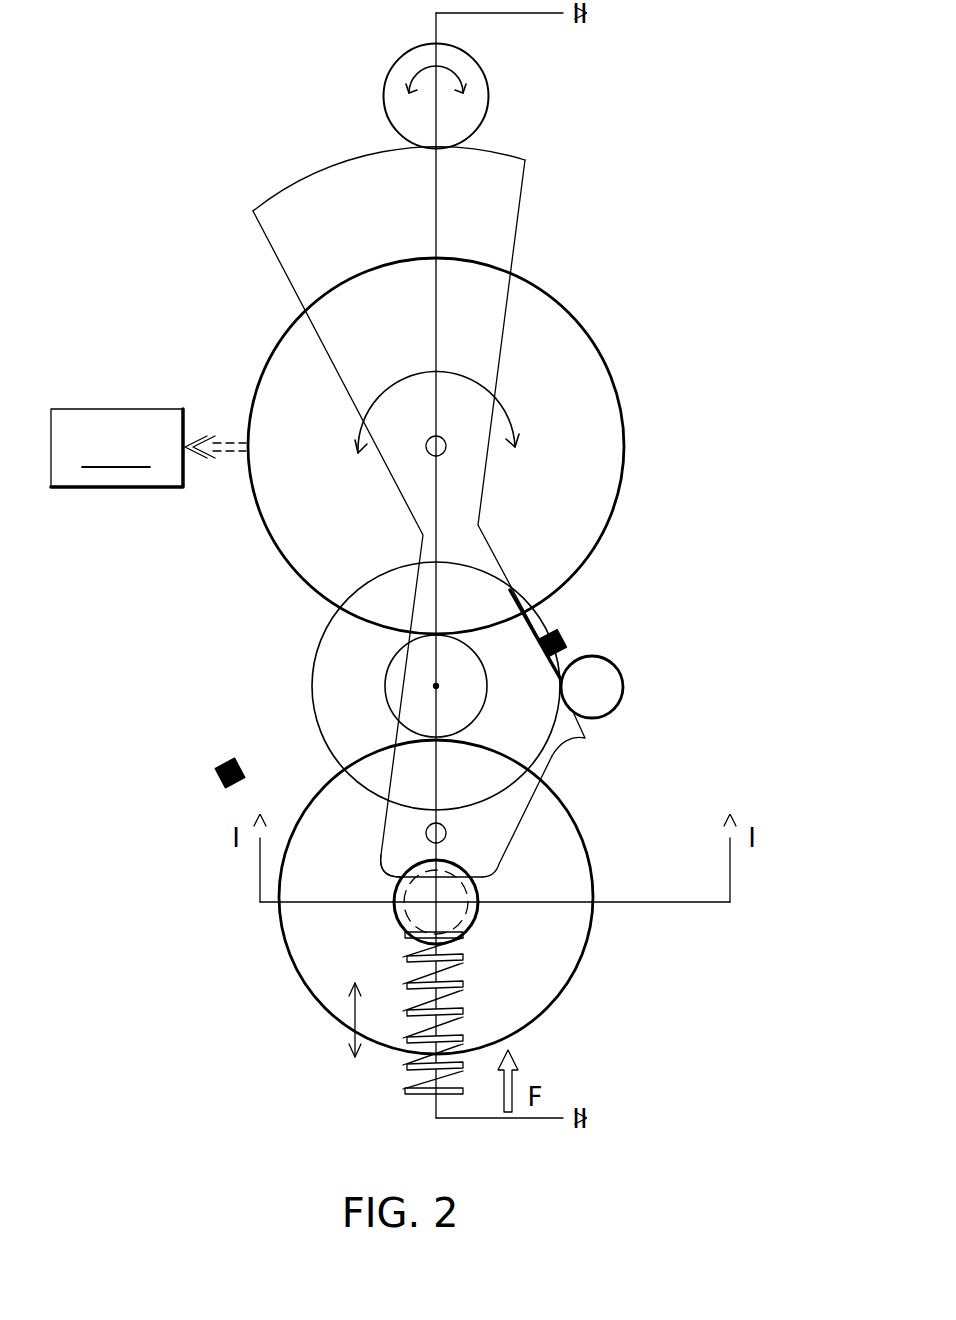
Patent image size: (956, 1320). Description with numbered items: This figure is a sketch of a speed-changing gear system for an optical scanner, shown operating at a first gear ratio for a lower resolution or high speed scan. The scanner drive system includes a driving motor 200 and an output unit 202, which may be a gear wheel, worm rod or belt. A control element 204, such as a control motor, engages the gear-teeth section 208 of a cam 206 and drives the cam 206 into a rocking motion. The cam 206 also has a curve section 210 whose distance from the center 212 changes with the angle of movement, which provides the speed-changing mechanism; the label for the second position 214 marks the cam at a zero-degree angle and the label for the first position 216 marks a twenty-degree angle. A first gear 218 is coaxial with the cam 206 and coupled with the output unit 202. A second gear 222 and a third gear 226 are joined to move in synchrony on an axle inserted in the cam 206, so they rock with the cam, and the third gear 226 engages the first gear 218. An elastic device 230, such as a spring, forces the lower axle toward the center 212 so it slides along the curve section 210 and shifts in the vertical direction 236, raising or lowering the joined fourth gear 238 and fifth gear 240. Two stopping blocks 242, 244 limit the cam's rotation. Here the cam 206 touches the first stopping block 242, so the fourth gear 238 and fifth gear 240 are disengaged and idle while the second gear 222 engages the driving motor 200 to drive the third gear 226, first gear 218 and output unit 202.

The driving motor 200 is at (615, 665).
The output unit 202 is at (148, 448).
The control element 204 is at (398, 78).
The cam 206 is at (253, 211).
The gear-teeth section 208 is at (528, 158).
The curve section 210 is at (532, 815).
The center 212 is at (445, 452).
The second position 214 is at (592, 744).
The first position 216 is at (378, 873).
The first gear 218 is at (268, 538).
The second gear 222 is at (308, 688).
The third gear 226 is at (388, 676).
The elastic device 230 is at (412, 1093).
The vertical direction 236 is at (353, 1017).
The fourth gear 238 is at (478, 908).
The fifth gear 240 is at (520, 1032).
The first stopping block 242 is at (565, 638).
The stopping block 244 is at (225, 782).